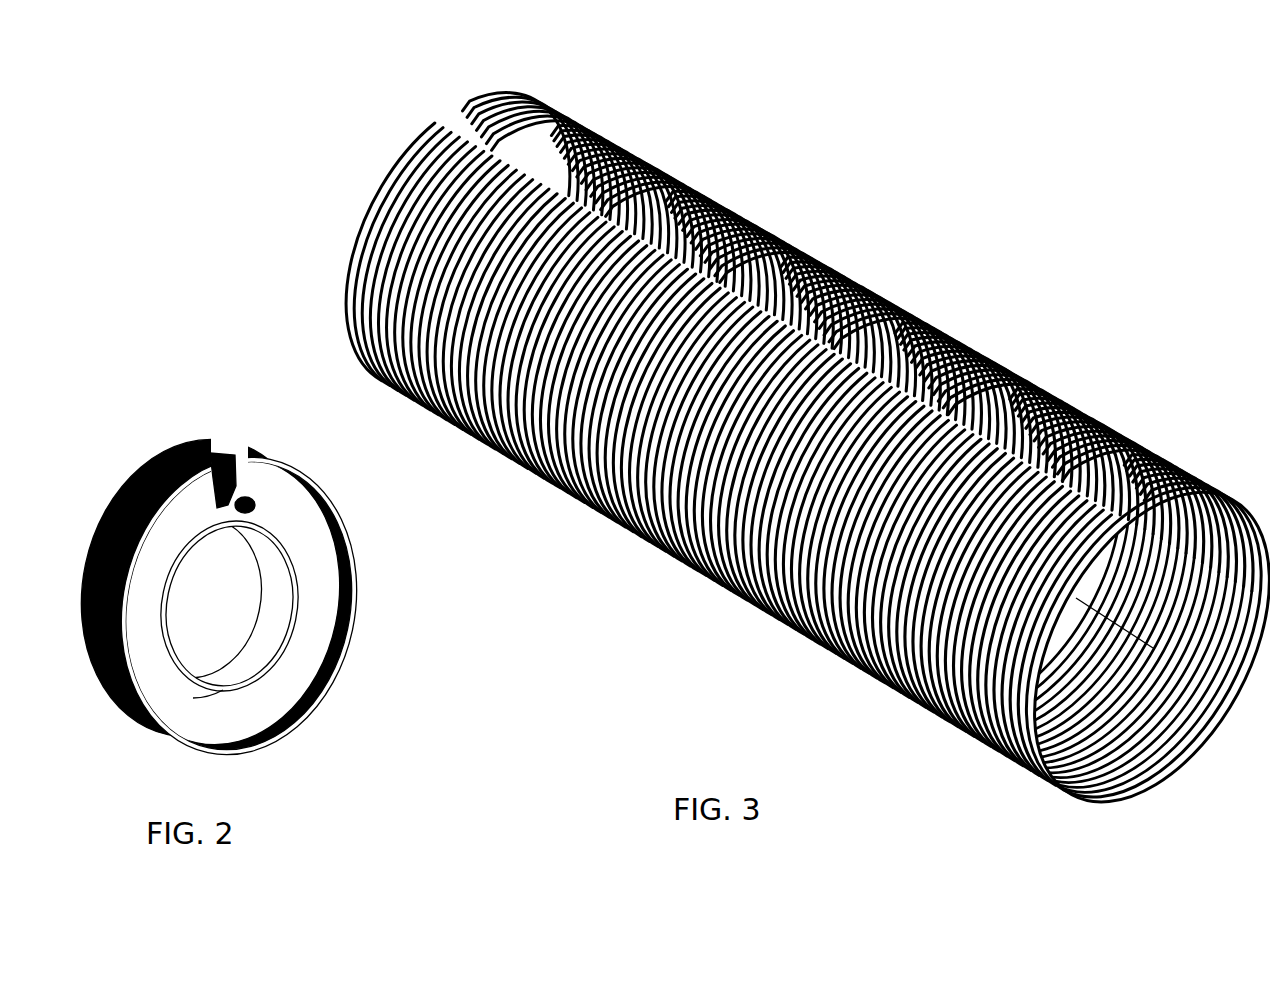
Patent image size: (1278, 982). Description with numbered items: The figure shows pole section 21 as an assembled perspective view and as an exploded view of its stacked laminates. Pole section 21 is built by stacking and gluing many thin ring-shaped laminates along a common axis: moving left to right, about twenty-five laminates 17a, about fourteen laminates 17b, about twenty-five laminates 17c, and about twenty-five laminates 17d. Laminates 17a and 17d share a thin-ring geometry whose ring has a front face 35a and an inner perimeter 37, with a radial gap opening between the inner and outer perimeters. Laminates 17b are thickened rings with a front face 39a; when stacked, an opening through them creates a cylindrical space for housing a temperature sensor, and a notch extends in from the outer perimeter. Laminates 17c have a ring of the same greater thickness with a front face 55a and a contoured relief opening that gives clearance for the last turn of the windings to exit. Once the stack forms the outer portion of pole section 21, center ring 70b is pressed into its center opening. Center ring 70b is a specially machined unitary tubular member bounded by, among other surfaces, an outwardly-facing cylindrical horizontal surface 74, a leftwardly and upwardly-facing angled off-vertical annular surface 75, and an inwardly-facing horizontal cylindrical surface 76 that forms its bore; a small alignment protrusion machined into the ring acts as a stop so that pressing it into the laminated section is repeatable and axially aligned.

In FIG. 2, the pole section 21 is at (160, 408).
In FIG. 2, the outwardly-facing cylindrical horizontal surface 74 is at (205, 455).
In FIG. 2, the front face 55a is at (303, 510).
In FIG. 2, the front face 39a is at (240, 505).
In FIG. 2, the leftwardly and upwardly-facing angled off-vertical annular surface 75 is at (283, 540).
In FIG. 2, the center ring 70b is at (302, 608).
In FIG. 2, the front face 35a is at (303, 663).
In FIG. 2, the inner perimeter 37 is at (210, 722).
In FIG. 2, the inwardly-facing horizontal cylindrical surface 76 is at (265, 585).
In FIG. 3, the laminates 17a is at (590, 113).
In FIG. 3, the laminates 17b is at (754, 208).
In FIG. 3, the laminates 17c is at (895, 290).
In FIG. 3, the laminates 17d is at (1126, 435).